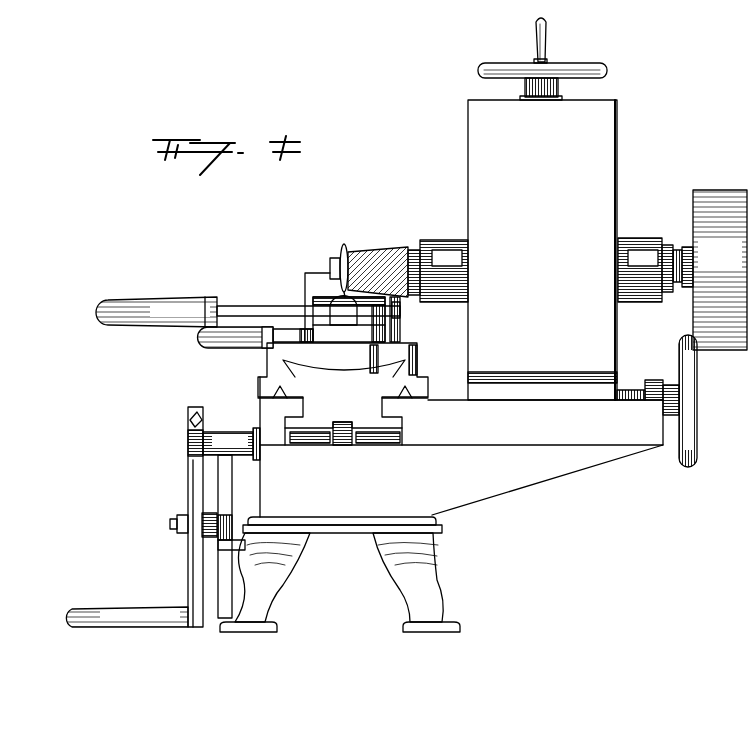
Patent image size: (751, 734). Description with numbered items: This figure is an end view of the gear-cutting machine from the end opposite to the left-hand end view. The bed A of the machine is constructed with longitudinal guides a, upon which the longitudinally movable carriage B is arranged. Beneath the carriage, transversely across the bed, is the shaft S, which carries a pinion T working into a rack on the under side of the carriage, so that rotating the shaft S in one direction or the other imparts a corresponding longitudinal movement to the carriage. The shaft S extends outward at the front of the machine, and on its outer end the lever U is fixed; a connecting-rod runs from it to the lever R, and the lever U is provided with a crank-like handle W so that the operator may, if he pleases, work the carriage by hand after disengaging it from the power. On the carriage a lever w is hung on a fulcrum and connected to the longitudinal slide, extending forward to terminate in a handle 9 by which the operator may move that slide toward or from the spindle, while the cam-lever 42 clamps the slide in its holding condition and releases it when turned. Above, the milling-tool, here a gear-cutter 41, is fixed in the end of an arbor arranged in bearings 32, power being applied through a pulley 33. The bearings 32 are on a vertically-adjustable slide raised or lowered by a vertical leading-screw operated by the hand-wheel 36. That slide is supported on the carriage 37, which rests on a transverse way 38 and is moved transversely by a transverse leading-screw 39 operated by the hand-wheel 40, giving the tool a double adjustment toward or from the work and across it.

The hand-wheel 36 is at (542, 59).
The carriage 37 is at (542, 250).
The bearings 32 is at (520, 270).
The pulley 33 is at (720, 270).
The transverse way 38 is at (461, 417).
The transverse leading-screw 39 is at (644, 388).
The hand-wheel 40 is at (692, 401).
The gear-cutter 41 is at (349, 265).
The cam-lever 42 is at (255, 345).
The operating handle 9 is at (156, 312).
The lever w is at (308, 305).
The carriage B is at (343, 394).
The longitudinal guides a is at (342, 396).
The pinion T is at (343, 444).
The bed A is at (441, 504).
The shaft S is at (231, 444).
The lever R is at (223, 536).
The lever U is at (185, 517).
The crank-like handle W is at (127, 608).